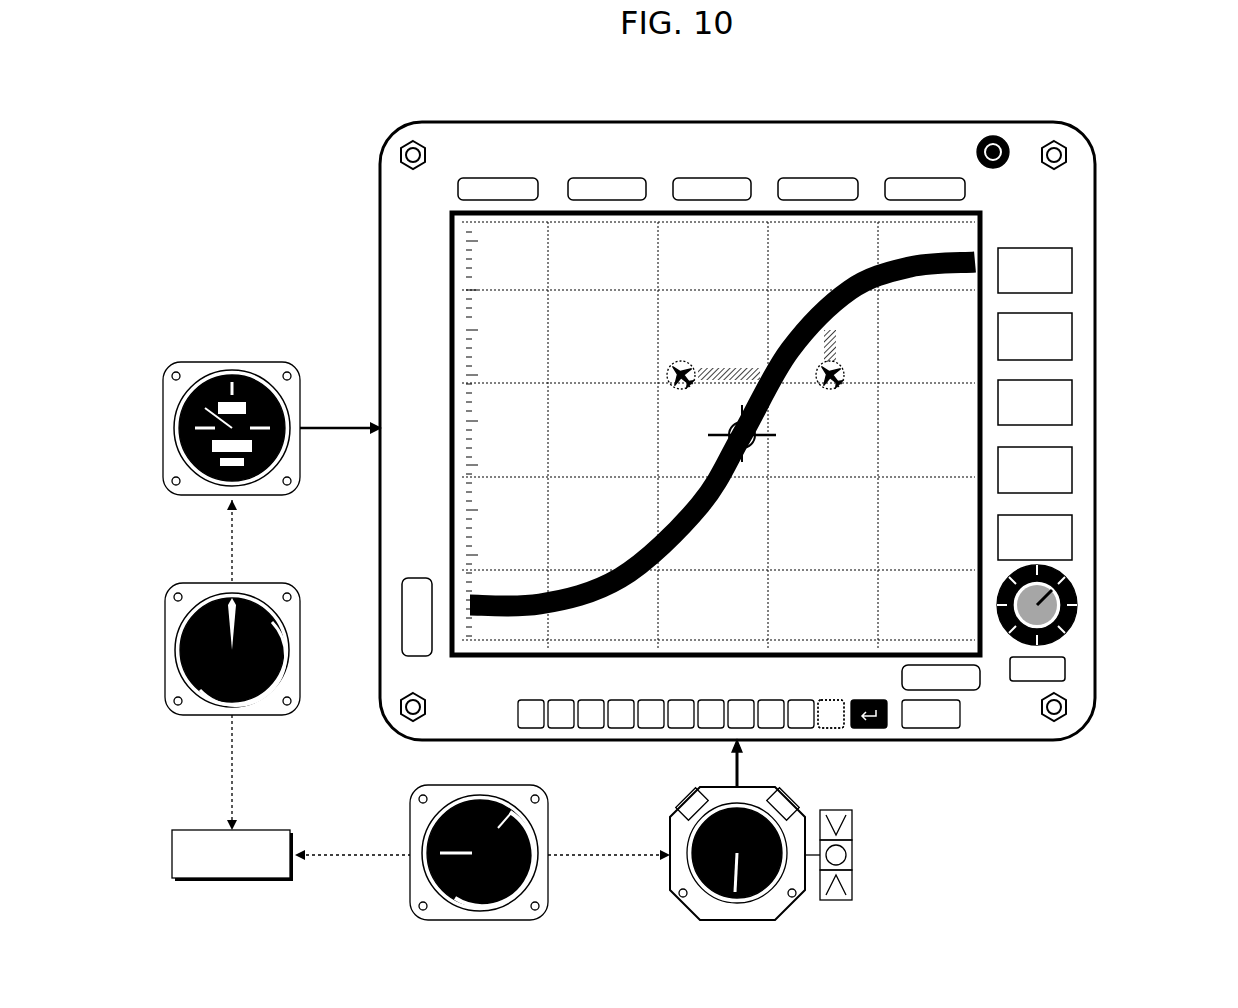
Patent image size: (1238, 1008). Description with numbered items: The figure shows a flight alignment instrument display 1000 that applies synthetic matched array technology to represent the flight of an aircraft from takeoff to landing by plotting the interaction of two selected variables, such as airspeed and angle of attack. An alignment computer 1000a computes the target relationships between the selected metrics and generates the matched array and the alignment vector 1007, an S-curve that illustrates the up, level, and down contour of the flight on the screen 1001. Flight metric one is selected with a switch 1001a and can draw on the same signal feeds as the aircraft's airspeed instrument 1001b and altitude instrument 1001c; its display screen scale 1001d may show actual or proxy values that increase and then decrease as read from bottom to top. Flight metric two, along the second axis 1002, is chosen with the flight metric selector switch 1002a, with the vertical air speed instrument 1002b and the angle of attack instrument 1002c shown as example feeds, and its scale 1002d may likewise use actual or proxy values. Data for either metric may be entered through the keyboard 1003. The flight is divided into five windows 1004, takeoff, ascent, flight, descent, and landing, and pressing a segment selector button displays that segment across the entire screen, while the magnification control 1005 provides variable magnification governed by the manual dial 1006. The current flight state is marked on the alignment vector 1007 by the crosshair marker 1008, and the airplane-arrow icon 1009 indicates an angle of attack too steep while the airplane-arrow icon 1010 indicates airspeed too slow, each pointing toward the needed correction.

The flight alignment instrument display 1000 is at (488, 122).
The alignment computer 1000a is at (172, 832).
The display screen 1001 is at (410, 345).
The switch 1001a is at (403, 580).
The airspeed instrument 1001b is at (165, 446).
The altitude instrument 1001c is at (165, 632).
The display screen scale 1001d is at (545, 362).
The numeric keypad 1002 is at (640, 680).
The flight metric selector switch 1002a is at (975, 692).
The vertical air speed instrument 1002b is at (410, 815).
The angle of attack instrument 1002c is at (672, 813).
The angle of attack axis label 1002d is at (740, 606).
The keyboard 1003 is at (830, 730).
The flight segment windows 1004 is at (765, 132).
The magnification control 1005 is at (1085, 230).
The manual dial 1006 is at (1078, 592).
The alignment vector 1007 is at (897, 290).
The crosshair marker 1008 is at (775, 430).
The airplane-arrow icon 1009 is at (740, 368).
The airplane-arrow icon 1010 is at (840, 352).